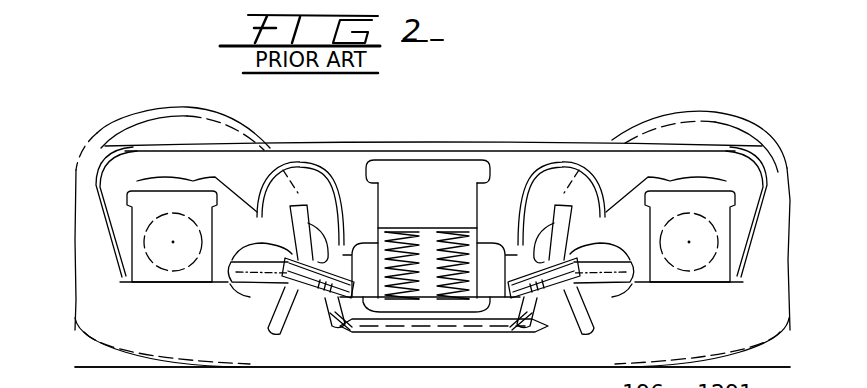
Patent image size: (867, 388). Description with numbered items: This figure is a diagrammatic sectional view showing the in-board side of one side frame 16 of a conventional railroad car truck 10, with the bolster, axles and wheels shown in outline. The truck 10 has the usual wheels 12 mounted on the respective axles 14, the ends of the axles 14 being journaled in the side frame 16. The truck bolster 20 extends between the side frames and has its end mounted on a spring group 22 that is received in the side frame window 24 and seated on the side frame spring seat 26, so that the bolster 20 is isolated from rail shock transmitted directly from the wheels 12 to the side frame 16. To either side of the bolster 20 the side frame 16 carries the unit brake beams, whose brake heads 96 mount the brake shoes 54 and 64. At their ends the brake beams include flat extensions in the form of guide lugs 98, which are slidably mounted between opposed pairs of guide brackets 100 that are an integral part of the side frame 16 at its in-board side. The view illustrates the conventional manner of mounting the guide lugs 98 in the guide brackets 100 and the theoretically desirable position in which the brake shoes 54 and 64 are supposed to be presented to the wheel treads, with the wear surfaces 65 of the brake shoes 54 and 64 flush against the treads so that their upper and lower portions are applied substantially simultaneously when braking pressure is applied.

The railroad car truck 10 is at (662, 74).
The wheels 12 is at (163, 80).
The axles 14 is at (179, 272).
The side frame 16 is at (592, 126).
The truck bolster 20 is at (433, 168).
The spring groups 22 is at (463, 197).
The side frame windows 24 is at (380, 220).
The side frame spring seats 26 is at (490, 336).
The brake shoe 54 is at (595, 198).
The brake shoe 64 is at (268, 203).
The wear surfaces 65 is at (293, 228).
The brake heads 96 is at (328, 237).
The guide lugs 98 is at (335, 322).
The guide brackets 100 is at (270, 298).